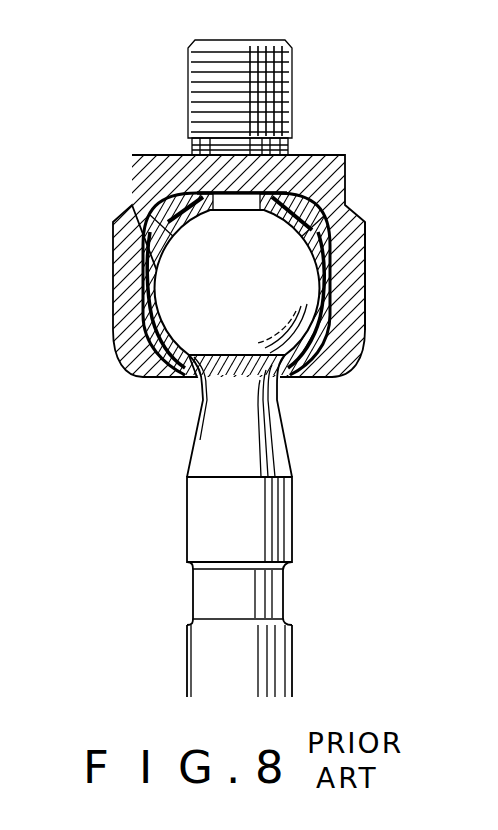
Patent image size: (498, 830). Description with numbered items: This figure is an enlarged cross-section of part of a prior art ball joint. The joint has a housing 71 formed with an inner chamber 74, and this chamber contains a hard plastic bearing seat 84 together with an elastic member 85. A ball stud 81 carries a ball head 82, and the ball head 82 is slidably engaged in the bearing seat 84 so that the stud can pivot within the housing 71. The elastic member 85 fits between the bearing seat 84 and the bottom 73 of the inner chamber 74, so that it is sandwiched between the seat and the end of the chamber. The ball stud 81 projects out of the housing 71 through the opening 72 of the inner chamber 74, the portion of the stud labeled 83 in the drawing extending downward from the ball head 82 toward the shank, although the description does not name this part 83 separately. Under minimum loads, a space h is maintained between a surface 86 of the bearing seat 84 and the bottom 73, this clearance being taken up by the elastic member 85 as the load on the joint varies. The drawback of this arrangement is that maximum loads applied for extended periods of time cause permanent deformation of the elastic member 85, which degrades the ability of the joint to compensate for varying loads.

The housing 71 is at (355, 260).
The opening 72 is at (300, 372).
The bottom of inner chamber 73 is at (297, 192).
The inner chamber 74 is at (363, 280).
The ball stud 81 is at (207, 527).
The ball head 82 is at (297, 312).
The neck of ball stud 83 is at (207, 447).
The bearing seat 84 is at (150, 253).
The elastic member 85 is at (322, 218).
The surface of bearing seat 86 is at (128, 208).
The space h is at (197, 192).